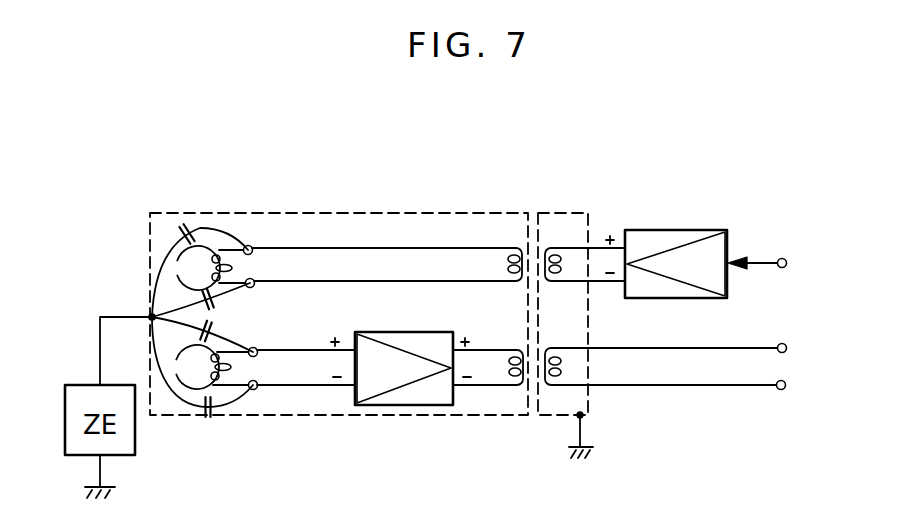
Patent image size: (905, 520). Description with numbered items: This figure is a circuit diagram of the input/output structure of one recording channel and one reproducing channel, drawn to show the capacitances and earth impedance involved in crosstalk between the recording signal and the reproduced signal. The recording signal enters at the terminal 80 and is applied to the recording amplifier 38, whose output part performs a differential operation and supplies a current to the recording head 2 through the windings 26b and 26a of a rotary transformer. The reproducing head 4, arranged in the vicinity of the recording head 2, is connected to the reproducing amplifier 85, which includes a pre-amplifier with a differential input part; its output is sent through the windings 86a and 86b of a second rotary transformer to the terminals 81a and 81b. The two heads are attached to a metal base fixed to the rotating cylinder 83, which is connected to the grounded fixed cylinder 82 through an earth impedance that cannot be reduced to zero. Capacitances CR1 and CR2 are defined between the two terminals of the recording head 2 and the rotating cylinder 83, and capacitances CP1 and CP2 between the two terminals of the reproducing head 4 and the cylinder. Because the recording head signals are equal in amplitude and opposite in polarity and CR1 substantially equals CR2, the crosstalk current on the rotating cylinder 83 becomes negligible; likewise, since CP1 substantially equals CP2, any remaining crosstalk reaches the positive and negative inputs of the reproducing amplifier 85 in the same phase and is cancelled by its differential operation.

The recording head 2 is at (175, 262).
The reproducing head 4 is at (178, 390).
The rotating cylinder 83 is at (193, 212).
The fixed cylinder 82 is at (590, 397).
The capacitance CR1 is at (220, 226).
The capacitance CR2 is at (221, 300).
The capacitance CP1 is at (219, 326).
The capacitance CP2 is at (222, 410).
The winding of the rotary transformer 26a is at (502, 247).
The winding of the rotary transformer 26b is at (572, 247).
The winding of the rotary transformer 86a is at (508, 385).
The winding of the rotary transformer 86b is at (555, 387).
The reproducing amplifier 85 is at (405, 405).
The recording amplifier 38 is at (668, 230).
The input terminal 80 is at (785, 258).
The terminal 81a is at (785, 343).
The terminal 81b is at (784, 389).